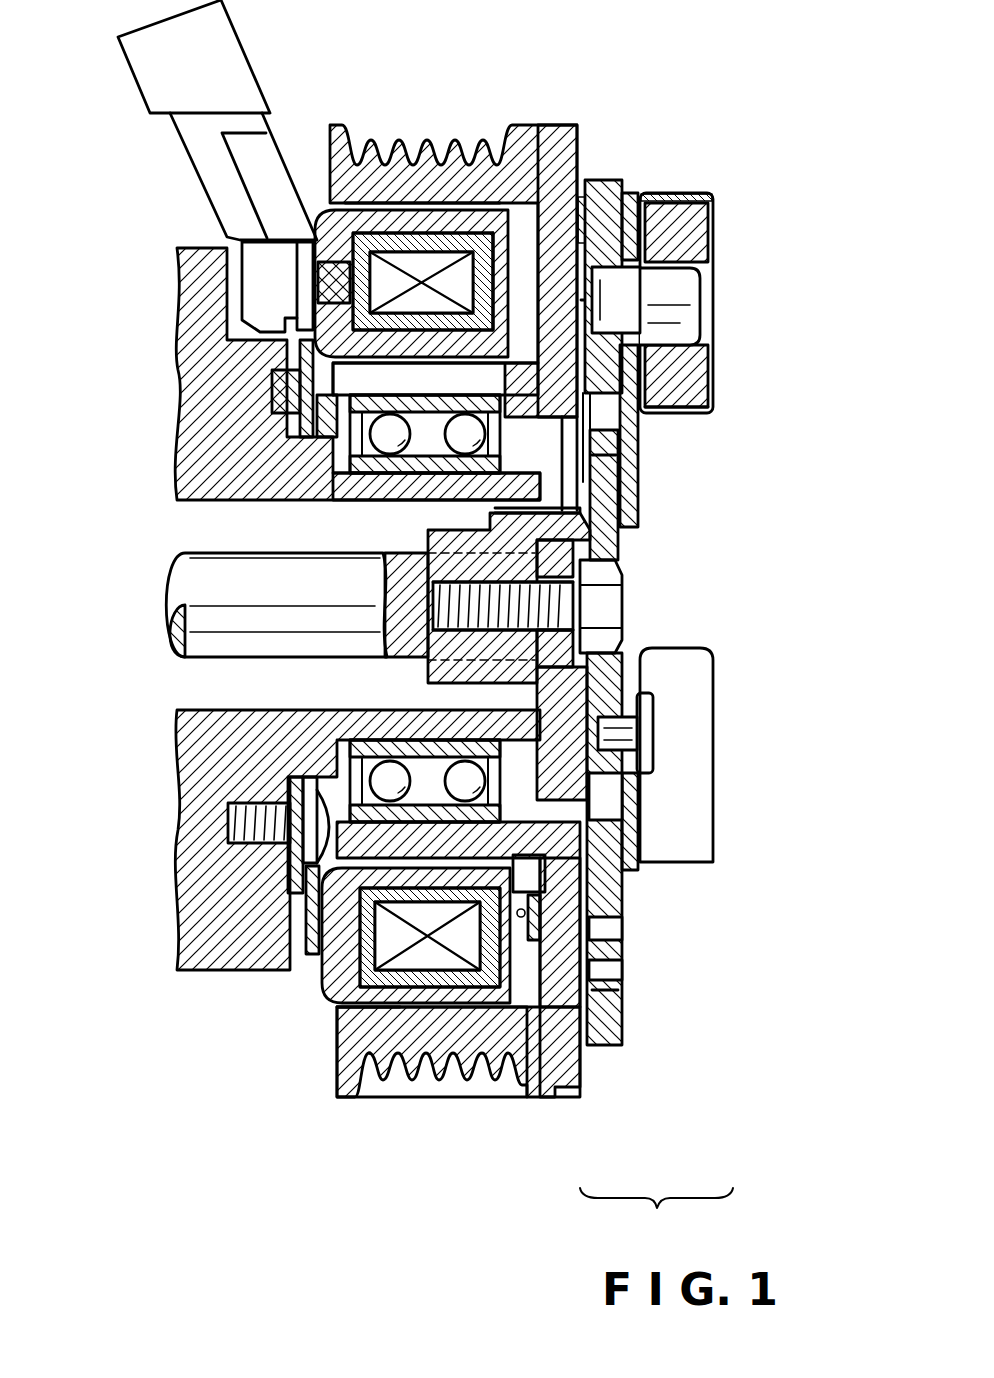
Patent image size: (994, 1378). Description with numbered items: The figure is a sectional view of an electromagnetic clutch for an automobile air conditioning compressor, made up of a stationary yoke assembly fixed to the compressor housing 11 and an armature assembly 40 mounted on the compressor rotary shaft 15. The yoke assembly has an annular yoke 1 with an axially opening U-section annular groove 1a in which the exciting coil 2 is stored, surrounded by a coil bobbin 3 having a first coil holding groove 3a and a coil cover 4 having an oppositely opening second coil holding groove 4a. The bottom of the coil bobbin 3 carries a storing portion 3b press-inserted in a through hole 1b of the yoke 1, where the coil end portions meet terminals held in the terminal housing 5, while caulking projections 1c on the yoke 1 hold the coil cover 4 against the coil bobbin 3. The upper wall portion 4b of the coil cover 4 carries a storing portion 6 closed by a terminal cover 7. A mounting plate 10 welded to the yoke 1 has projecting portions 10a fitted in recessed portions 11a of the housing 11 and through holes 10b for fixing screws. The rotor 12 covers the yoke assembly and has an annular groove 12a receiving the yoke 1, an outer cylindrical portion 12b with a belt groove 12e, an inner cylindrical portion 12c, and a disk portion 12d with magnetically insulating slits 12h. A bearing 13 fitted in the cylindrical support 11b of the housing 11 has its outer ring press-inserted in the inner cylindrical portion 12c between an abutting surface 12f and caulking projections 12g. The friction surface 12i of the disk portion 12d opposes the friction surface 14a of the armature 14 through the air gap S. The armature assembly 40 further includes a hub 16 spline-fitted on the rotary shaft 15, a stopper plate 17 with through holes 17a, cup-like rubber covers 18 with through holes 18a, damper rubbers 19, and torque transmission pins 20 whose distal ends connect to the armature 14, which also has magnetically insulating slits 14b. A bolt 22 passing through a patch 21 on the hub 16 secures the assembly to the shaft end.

The yoke 1 is at (460, 266).
The annular groove 1a is at (420, 215).
The through hole 1b is at (300, 290).
The caulking projections 1c is at (500, 270).
The exciting coil 2 is at (430, 252).
The coil bobbin 3 is at (397, 189).
The first coil holding groove 3a is at (398, 240).
The storing portion 3b is at (328, 240).
The coil cover 4 is at (470, 200).
The second coil holding groove 4a is at (560, 230).
The upper wall portion 4b is at (530, 1088).
The terminal housing 5 is at (150, 70).
The storing portion 6 is at (622, 875).
The terminal cover 7 is at (604, 914).
The mounting plate 10 is at (314, 840).
The projecting portions 10a is at (280, 388).
The through holes 10b is at (288, 808).
The housing 11 is at (319, 362).
The housing stem 11a is at (290, 403).
The cylindrical support 11b is at (402, 490).
The rotor 12 is at (440, 1005).
The annular groove 12a is at (332, 1006).
The outer cylindrical portion 12b is at (345, 1040).
The inner cylindrical portion 12c is at (330, 770).
The disk portion 12d is at (604, 978).
The belt groove 12e is at (398, 1072).
The abutting surface 12f is at (604, 456).
The caulking projections 12g is at (320, 420).
The magnetically insulating slits 12h is at (604, 892).
The friction surface 12i is at (600, 1047).
The bearing 13 is at (390, 765).
The armature 14 is at (671, 621).
The friction surface 14a is at (605, 180).
The magnetically insulating slits 14b is at (610, 940).
The rotary shaft 15 is at (185, 578).
The hub 16 is at (614, 512).
The stopper plate 17 is at (612, 492).
The through holes 17a is at (642, 280).
The rubber covers 18 is at (700, 501).
The through holes 18a is at (652, 396).
The damper rubbers 19 is at (692, 362).
The torque transmission pins 20 is at (690, 307).
The patch 21 is at (575, 552).
The bolt 22 is at (595, 598).
The armature assembly 40 is at (656, 1218).
The air gap S is at (592, 175).